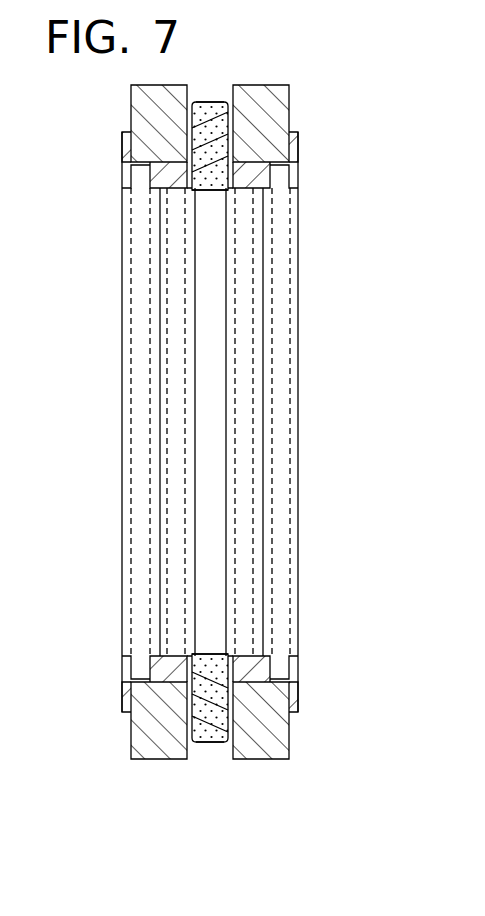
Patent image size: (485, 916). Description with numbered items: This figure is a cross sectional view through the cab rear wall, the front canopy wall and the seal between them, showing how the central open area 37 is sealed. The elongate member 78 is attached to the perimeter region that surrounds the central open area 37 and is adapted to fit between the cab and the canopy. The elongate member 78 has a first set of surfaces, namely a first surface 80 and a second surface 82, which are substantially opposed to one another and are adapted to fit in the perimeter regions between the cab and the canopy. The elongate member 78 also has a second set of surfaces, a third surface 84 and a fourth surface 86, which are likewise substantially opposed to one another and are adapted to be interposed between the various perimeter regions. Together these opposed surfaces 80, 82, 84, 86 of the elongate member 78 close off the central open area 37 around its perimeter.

The central open area 37 is at (210, 340).
The elongate member 78 is at (218, 117).
The first surface 80 is at (211, 193).
The second surface 82 is at (208, 102).
The third surface 84 is at (233, 148).
The fourth surface 86 is at (188, 150).